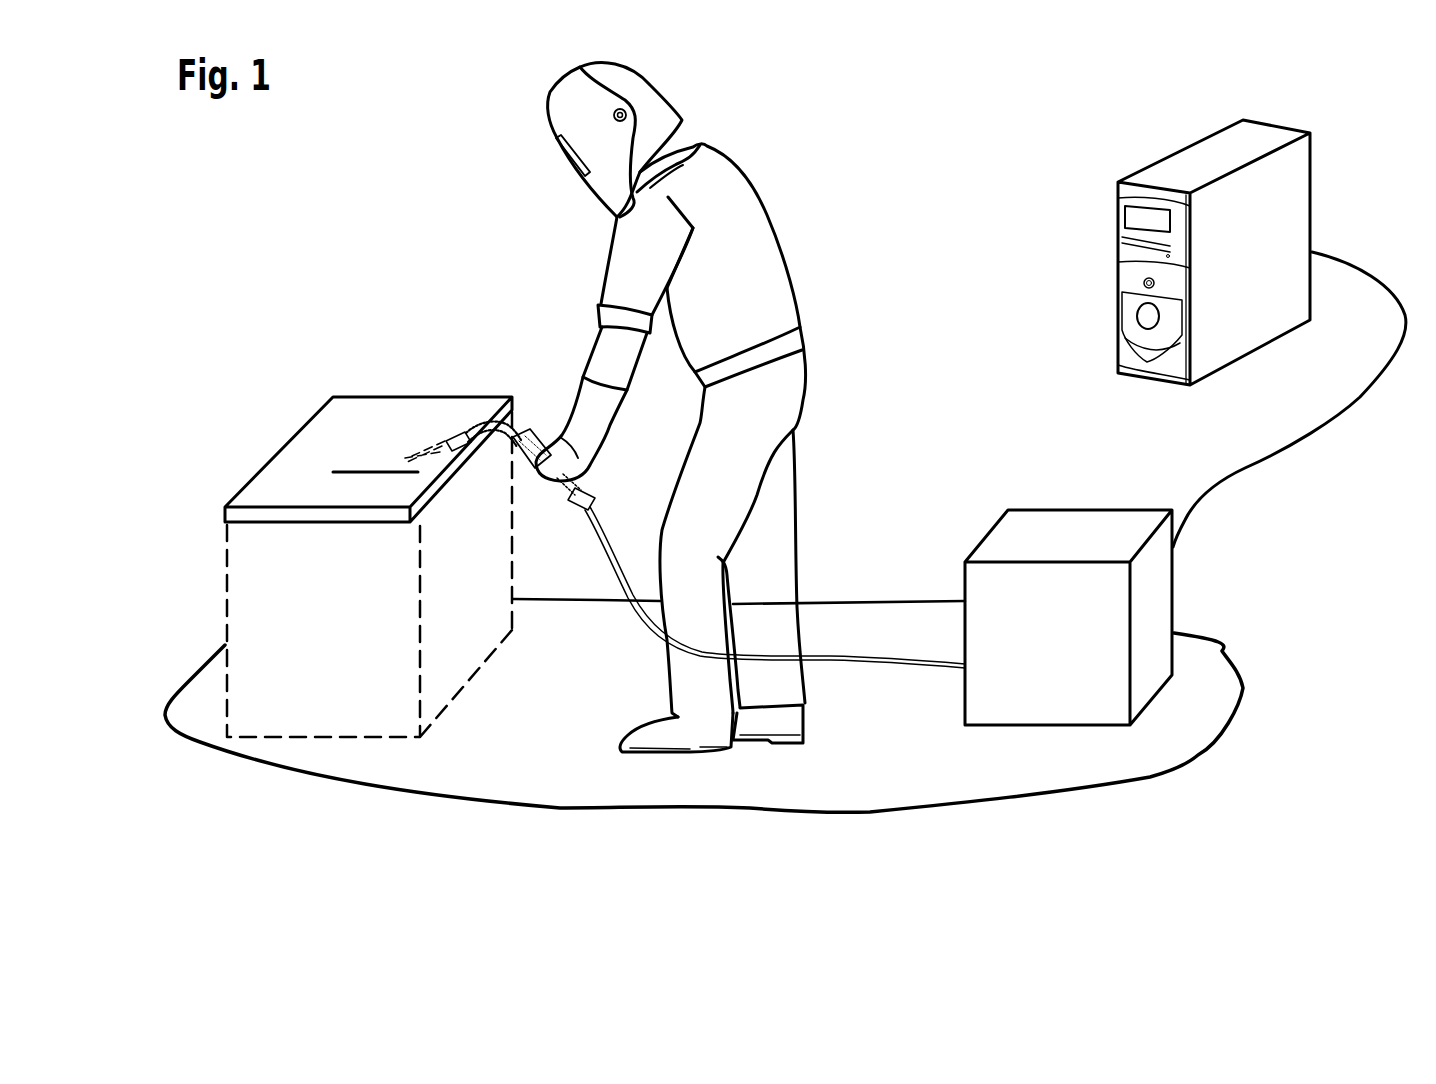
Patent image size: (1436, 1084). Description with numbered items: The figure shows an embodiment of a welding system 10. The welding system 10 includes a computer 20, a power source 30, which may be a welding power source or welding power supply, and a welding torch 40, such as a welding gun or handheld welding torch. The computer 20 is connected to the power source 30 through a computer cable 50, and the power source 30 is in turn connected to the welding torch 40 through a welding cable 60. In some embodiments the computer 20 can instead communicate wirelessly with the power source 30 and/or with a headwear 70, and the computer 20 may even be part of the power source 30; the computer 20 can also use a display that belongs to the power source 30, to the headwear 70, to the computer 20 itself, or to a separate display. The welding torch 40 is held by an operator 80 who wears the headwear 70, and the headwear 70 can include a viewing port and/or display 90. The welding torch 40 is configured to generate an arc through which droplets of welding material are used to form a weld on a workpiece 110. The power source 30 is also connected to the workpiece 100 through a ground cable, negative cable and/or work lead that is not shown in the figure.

The welding system 10 is at (431, 147).
The computer 20 is at (1118, 272).
The power source 30 is at (1075, 518).
The welding torch 40 is at (545, 424).
The computer cable 50 is at (1295, 450).
The welding cable 60 is at (848, 655).
The headwear 70 is at (559, 78).
The operator 80 is at (723, 152).
The viewing port and/or display 90 is at (568, 162).
The workpiece 100 is at (400, 467).
The workpiece 110 is at (282, 446).